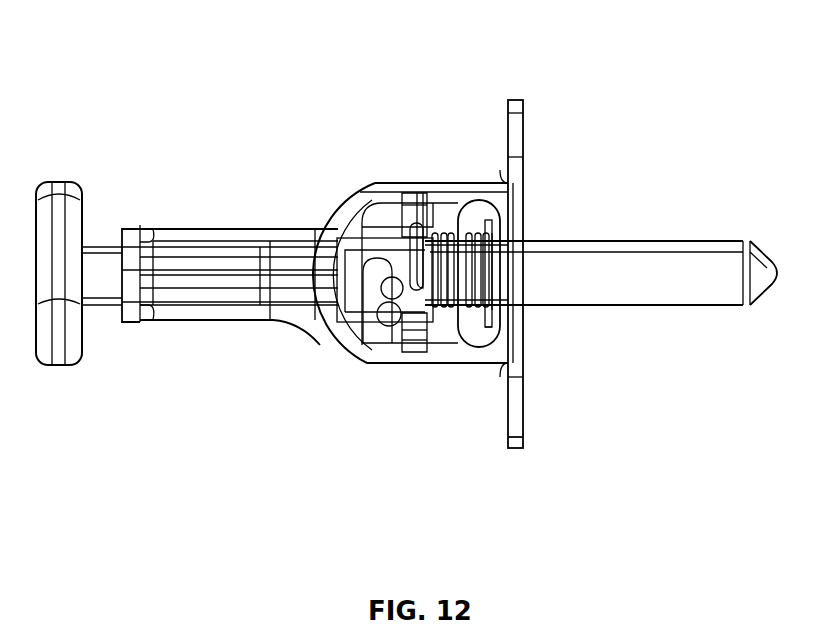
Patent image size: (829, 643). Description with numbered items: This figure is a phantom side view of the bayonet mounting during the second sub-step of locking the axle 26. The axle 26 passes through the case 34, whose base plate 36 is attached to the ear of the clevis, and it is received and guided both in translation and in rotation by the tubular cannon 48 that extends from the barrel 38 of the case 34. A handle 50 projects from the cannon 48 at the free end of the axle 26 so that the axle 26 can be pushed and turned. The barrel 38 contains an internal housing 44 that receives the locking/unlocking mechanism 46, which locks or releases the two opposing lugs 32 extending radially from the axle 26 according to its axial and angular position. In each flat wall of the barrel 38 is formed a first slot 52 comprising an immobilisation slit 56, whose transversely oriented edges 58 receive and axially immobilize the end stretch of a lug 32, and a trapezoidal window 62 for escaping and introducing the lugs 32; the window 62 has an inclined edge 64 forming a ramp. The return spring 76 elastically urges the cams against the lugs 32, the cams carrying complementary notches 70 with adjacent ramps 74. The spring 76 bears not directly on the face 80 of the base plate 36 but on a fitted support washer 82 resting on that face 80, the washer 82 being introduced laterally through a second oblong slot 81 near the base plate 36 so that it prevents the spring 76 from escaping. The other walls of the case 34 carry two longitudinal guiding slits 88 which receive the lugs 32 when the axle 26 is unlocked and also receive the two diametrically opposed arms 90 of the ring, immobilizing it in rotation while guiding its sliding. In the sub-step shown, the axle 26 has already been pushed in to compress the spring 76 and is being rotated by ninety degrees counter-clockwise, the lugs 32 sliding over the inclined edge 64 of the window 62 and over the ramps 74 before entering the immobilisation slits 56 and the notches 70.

The axle 26 is at (712, 280).
The lugs 32 is at (392, 323).
The case 34 is at (448, 185).
The base plate 36 is at (520, 443).
The barrel 38 is at (368, 175).
The internal housing 44 is at (448, 323).
The locking/unlocking mechanism 46 is at (462, 237).
The tubular cannon 48 is at (208, 322).
The handle 50 is at (58, 353).
The first slot 52 is at (360, 298).
The slit 56 is at (390, 285).
The transversely oriented edges 58 is at (373, 263).
The window 62 is at (380, 330).
The inclined edge 64 is at (487, 243).
The notches 70 is at (417, 230).
The ramps 74 is at (420, 235).
The return spring 76 is at (447, 330).
The face of the base plate 80 is at (500, 318).
The second oblong slot 81 is at (500, 363).
The support washer 82 is at (493, 290).
The longitudinal guiding slits 88 is at (330, 340).
The arms 90 is at (415, 357).